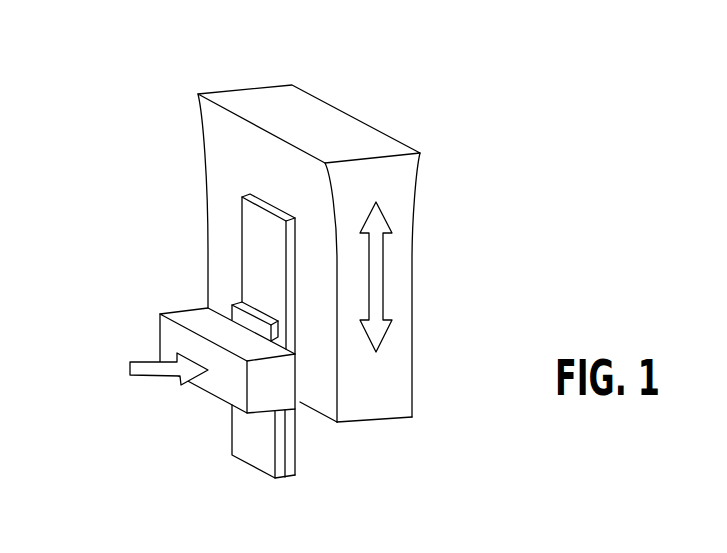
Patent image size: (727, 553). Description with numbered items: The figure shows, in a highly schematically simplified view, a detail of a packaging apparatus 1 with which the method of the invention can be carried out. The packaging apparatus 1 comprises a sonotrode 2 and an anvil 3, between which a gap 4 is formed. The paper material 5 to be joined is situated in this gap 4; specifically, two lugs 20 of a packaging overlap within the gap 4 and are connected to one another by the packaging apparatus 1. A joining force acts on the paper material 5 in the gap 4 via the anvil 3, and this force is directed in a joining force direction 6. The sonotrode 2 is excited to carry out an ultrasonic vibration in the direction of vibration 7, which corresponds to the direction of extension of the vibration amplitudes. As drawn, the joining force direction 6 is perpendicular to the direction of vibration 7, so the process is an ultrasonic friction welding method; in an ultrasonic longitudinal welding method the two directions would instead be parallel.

The packaging apparatus 1 is at (259, 264).
The sonotrode 2 is at (237, 157).
The anvil 3 is at (190, 318).
The gap 4 is at (307, 373).
The paper material 5 is at (247, 222).
The joining force direction 6 is at (150, 370).
The direction of vibration 7 is at (378, 267).
The lugs 20 is at (292, 328).